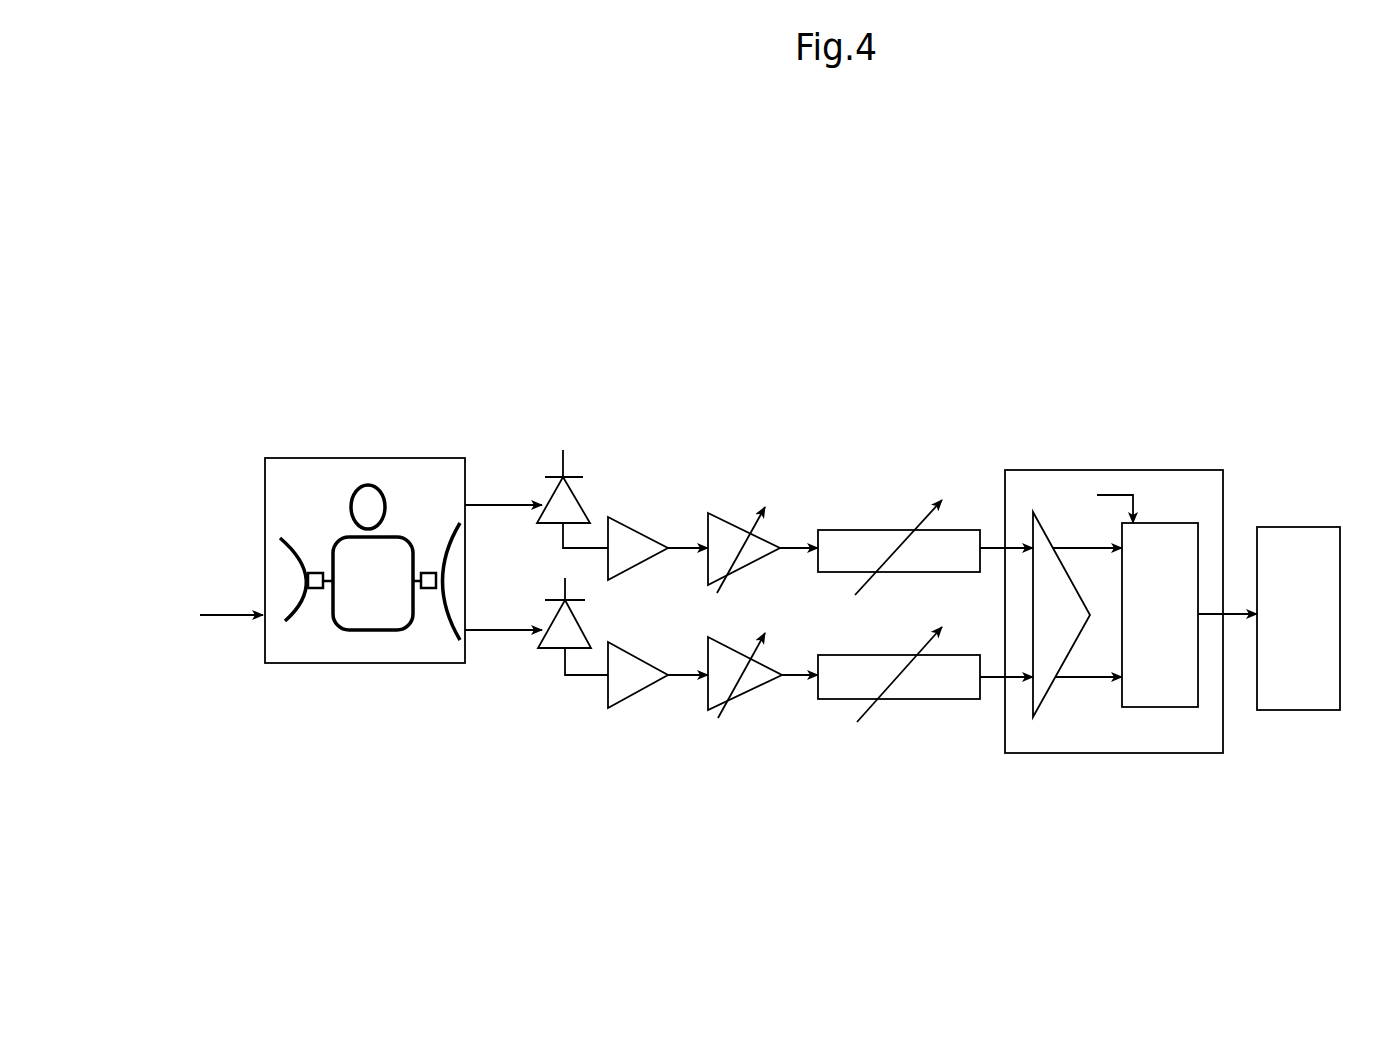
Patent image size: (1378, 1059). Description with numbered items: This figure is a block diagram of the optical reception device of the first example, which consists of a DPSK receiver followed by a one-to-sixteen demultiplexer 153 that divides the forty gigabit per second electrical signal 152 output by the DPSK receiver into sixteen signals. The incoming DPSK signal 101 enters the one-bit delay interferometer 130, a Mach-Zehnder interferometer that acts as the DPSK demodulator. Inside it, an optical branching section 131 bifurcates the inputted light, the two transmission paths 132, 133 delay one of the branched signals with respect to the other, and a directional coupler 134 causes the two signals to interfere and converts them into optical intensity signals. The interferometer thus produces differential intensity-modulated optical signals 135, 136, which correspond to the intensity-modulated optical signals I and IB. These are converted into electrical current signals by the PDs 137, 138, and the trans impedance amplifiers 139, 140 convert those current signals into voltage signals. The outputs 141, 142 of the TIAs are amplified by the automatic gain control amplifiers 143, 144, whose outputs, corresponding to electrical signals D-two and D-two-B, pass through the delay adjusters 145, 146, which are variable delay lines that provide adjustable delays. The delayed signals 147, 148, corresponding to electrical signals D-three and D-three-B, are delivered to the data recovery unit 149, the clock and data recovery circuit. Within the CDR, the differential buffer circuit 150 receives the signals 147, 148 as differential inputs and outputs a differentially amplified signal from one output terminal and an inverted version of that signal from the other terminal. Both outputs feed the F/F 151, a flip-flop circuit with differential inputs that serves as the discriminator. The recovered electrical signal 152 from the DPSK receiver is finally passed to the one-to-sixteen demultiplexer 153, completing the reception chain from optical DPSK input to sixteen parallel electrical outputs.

The DPSK signal 101 is at (220, 613).
The one-bit delay interferometer 130 is at (430, 458).
The optical branching section 131 is at (313, 590).
The transmission path 132 is at (356, 490).
The transmission path 133 is at (367, 632).
The directional coupler 134 is at (428, 590).
The differential intensity-modulated optical signal 135 is at (498, 505).
The differential intensity-modulated optical signal 136 is at (493, 630).
The PD (photo detector) 137 is at (578, 500).
The PD (photo detector) 138 is at (553, 650).
The trans impedance amplifier (TIA) 139 is at (640, 525).
The trans impedance amplifier (TIA) 140 is at (630, 690).
The output of TIA 141 is at (678, 530).
The output of TIA 142 is at (678, 678).
The automatic gain control (AGC) amplifier 143 is at (728, 518).
The automatic gain control (AGC) amplifier 144 is at (748, 695).
The delay adjuster (variable delay line) 145 is at (868, 528).
The delay adjuster (variable delay line) 146 is at (910, 702).
The signal outputted from delay adjuster 147 is at (992, 548).
The signal outputted from delay adjuster 148 is at (992, 683).
The data recovery unit (CDR) 149 is at (1150, 470).
The differential buffer circuit 150 is at (1050, 690).
The F/F (flip-flop circuit) 151 is at (1148, 522).
The electrical signal 152 is at (1232, 612).
The 1:16 demultiplexer 153 is at (1312, 527).